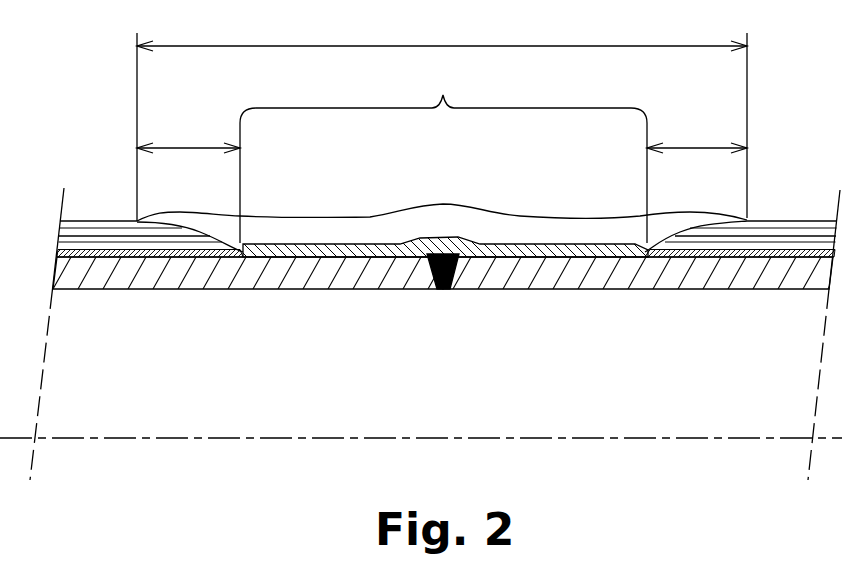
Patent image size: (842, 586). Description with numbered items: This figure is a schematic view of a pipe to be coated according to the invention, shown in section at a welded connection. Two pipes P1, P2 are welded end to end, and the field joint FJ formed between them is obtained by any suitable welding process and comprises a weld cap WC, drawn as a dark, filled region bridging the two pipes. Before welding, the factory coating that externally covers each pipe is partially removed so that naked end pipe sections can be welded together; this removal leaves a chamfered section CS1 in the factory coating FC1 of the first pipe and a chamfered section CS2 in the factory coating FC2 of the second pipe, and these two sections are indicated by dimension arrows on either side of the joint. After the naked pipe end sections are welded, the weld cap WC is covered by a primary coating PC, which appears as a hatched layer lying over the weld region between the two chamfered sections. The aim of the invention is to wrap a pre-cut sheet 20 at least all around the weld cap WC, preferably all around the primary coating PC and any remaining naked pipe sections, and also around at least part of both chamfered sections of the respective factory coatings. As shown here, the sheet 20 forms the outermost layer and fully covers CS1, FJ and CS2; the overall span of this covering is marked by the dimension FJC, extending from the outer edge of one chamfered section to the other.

The sheet 20 is at (580, 232).
The field joint coating width FJC is at (442, 113).
The field joint FJ is at (443, 152).
The chamfered section CS1 is at (188, 135).
The chamfered section CS2 is at (697, 135).
The factory coating FC1 is at (117, 235).
The factory coating FC2 is at (785, 235).
The primary coating PC is at (340, 244).
The weld cap WC is at (458, 252).
The pipe P1 is at (239, 280).
The pipe P2 is at (662, 276).